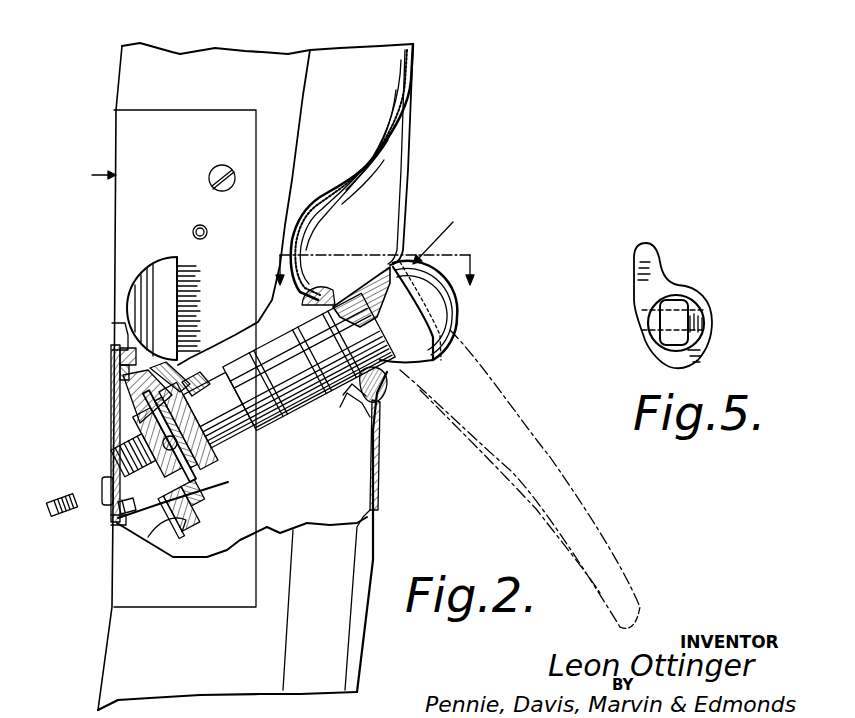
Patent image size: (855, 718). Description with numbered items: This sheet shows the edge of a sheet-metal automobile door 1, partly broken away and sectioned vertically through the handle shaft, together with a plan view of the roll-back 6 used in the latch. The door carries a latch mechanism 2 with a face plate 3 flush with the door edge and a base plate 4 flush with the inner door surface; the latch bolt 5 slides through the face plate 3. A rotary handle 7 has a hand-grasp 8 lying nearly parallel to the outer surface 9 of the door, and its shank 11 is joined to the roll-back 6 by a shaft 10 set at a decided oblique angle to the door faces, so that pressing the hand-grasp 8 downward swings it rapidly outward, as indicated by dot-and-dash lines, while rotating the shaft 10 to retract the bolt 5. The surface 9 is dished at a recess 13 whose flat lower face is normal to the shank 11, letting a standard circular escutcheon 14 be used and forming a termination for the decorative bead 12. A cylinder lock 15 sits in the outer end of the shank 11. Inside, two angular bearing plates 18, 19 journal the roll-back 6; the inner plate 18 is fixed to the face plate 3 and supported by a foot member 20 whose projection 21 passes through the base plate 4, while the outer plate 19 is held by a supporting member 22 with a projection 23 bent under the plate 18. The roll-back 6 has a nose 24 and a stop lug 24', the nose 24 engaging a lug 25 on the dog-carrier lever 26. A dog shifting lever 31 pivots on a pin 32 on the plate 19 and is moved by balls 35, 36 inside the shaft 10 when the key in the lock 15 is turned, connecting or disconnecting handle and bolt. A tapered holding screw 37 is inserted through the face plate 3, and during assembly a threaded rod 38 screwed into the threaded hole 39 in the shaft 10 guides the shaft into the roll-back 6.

In FIG. 2, the door 1 is at (220, 47).
In FIG. 2, the latch mechanism 2 is at (93, 174).
In FIG. 2, the face plate 3 is at (218, 122).
In FIG. 2, the base plate 4 is at (111, 403).
In FIG. 2, the latch bolt 5 is at (147, 292).
In FIG. 2, the roll-back 6 is at (207, 497).
In FIG. 5, the roll-back 6 is at (697, 290).
In FIG. 2, the rotary handle 7 is at (440, 229).
In FIG. 2, the hand-grasp 8 is at (455, 318).
In FIG. 2, the outer surface of the door 9 is at (407, 172).
In FIG. 2, the shaft 10 is at (237, 440).
In FIG. 2, the shank 11 is at (333, 405).
In FIG. 2, the bead 12 is at (386, 400).
In FIG. 2, the recess 13 is at (300, 213).
In FIG. 2, the escutcheon 14 is at (325, 290).
In FIG. 2, the cylinder lock 15 is at (363, 303).
In FIG. 2, the inner roll-back bearing plate 18 is at (167, 523).
In FIG. 2, the outer roll-back bearing plate 19 is at (230, 483).
In FIG. 2, the foot member 20 is at (123, 512).
In FIG. 2, the projection 21 is at (102, 483).
In FIG. 2, the supporting member 22 is at (210, 507).
In FIG. 2, the projection 23 is at (180, 520).
In FIG. 2, the nose 24 is at (93, 371).
In FIG. 5, the nose 24 is at (641, 301).
In FIG. 2, the stop lug 24' is at (202, 544).
In FIG. 5, the stop lug 24' is at (730, 357).
In FIG. 2, the lug 25 is at (120, 353).
In FIG. 2, the dog-carrier lever 26 is at (112, 324).
In FIG. 2, the dog shifting lever 31 is at (230, 463).
In FIG. 2, the pin 32 is at (218, 410).
In FIG. 2, the ball 35 is at (230, 443).
In FIG. 2, the ball 36 is at (200, 392).
In FIG. 2, the holding screw 37 is at (123, 440).
In FIG. 2, the rod 38 is at (62, 520).
In FIG. 2, the threaded hole 39 is at (140, 453).